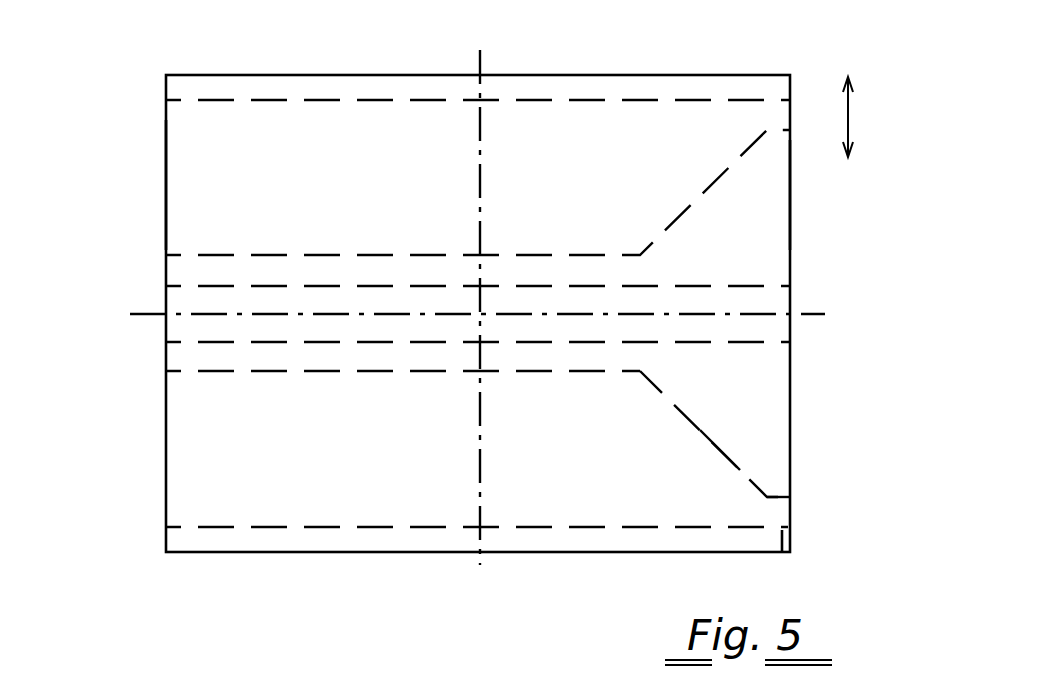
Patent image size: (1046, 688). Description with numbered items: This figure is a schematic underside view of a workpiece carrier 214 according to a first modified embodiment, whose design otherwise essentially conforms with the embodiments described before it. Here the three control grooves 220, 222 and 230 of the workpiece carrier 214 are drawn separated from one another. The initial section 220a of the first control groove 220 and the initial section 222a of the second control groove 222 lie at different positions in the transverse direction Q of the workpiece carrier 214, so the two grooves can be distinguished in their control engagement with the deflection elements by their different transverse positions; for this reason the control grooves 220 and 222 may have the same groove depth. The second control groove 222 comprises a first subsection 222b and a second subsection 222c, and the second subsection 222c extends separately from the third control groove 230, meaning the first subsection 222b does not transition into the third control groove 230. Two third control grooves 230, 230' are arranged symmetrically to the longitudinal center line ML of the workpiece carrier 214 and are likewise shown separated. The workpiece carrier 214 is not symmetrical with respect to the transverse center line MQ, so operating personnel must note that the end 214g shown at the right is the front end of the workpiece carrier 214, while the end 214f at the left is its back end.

The workpiece carrier 214 is at (166, 123).
The back end 214f is at (164, 184).
The front end 214g is at (793, 203).
The first control groove 220 is at (222, 528).
The initial section of first control groove 220a is at (782, 530).
The second control groove 222 is at (707, 433).
The initial section of second control groove 222a is at (780, 497).
The first subsection of second control groove 222b is at (740, 467).
The second subsection of second control groove 222c is at (213, 373).
The third control groove 230 is at (524, 353).
The third control groove 230' is at (526, 260).
The transverse center line MQ is at (482, 58).
The longitudinal center line ML is at (133, 313).
The transverse direction Q is at (862, 117).